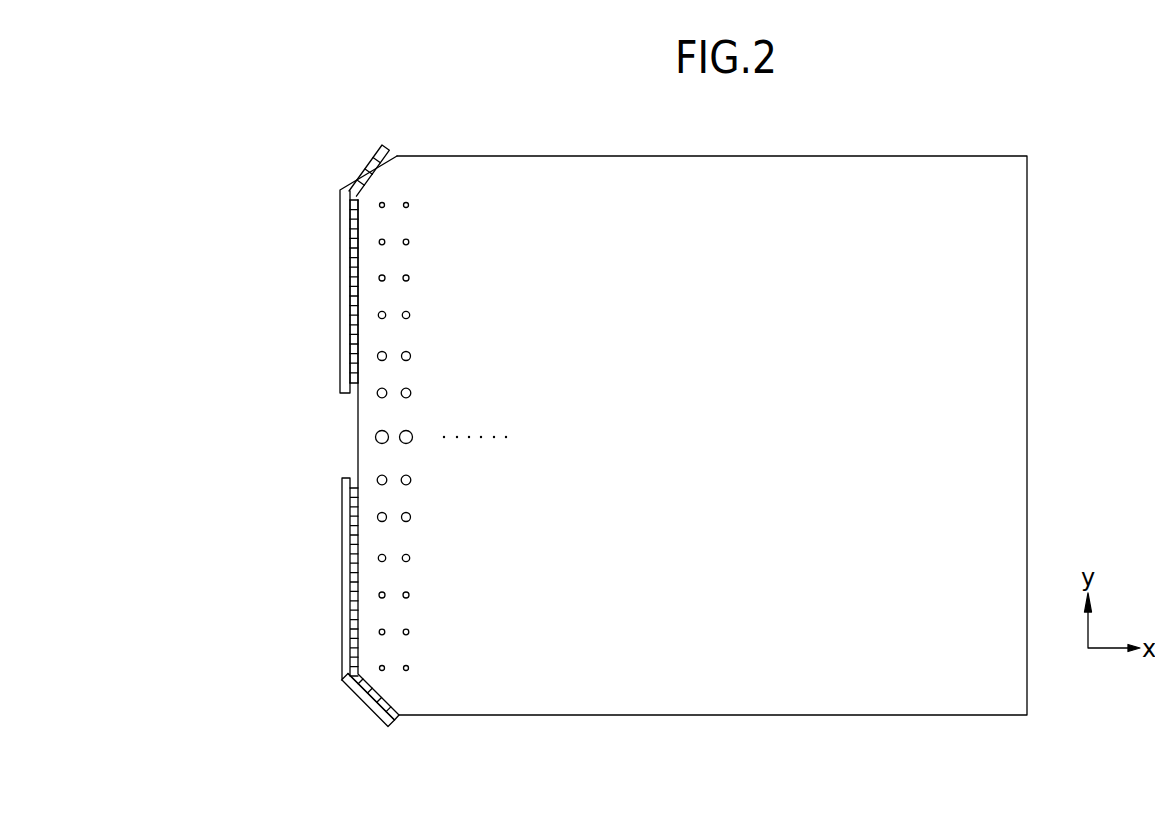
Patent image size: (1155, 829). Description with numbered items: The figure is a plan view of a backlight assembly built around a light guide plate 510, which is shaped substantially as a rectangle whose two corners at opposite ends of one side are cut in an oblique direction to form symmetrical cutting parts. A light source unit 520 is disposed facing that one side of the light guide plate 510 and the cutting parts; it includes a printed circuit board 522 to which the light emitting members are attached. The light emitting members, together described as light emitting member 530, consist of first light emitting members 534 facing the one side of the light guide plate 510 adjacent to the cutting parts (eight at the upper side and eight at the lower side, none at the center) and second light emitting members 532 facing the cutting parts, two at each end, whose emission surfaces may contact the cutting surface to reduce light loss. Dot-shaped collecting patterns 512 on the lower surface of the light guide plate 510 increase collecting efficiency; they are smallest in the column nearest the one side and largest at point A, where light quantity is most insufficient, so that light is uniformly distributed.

The light guide plate 510 is at (600, 716).
The collecting patterns 512 is at (408, 671).
The light source unit 520 is at (295, 416).
The printed circuit board 522 is at (315, 438).
The light emitting member 530 is at (321, 606).
The second light emitting member 532 is at (359, 698).
The first light emitting member 534 is at (352, 669).